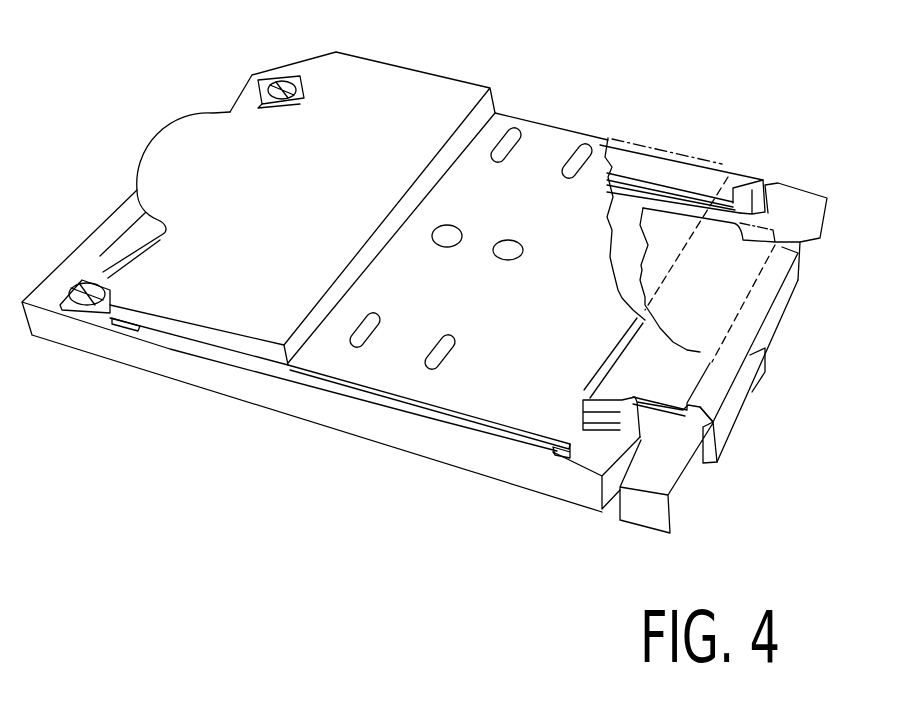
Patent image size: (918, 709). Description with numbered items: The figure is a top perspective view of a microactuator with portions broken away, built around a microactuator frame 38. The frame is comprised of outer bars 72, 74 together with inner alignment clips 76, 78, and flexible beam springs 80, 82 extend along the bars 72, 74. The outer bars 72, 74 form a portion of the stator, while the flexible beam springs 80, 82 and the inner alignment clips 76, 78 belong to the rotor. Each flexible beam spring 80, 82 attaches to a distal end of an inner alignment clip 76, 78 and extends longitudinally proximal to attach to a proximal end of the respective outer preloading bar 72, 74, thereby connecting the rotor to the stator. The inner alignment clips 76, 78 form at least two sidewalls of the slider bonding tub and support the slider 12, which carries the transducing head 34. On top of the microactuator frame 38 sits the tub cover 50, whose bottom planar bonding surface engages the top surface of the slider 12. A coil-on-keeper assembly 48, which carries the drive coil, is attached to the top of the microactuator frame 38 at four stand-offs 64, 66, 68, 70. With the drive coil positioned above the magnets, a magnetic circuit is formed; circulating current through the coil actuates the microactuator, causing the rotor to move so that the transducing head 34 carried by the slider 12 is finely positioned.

The slider 12 is at (800, 270).
The transducing head 34 is at (758, 368).
The microactuator frame 38 is at (228, 397).
The coil-on-keeper assembly 48 is at (550, 120).
The tub cover 50 is at (687, 367).
The stand-off 64 is at (566, 450).
The stand-off 66 is at (724, 172).
The stand-off 68 is at (306, 82).
The stand-off 70 is at (110, 303).
The outer bar 72 is at (573, 487).
The outer bar 74 is at (733, 176).
The inner alignment clip 76 is at (687, 483).
The inner alignment clip 78 is at (818, 226).
The flexible beam spring 80 is at (615, 433).
The flexible beam spring 82 is at (722, 205).